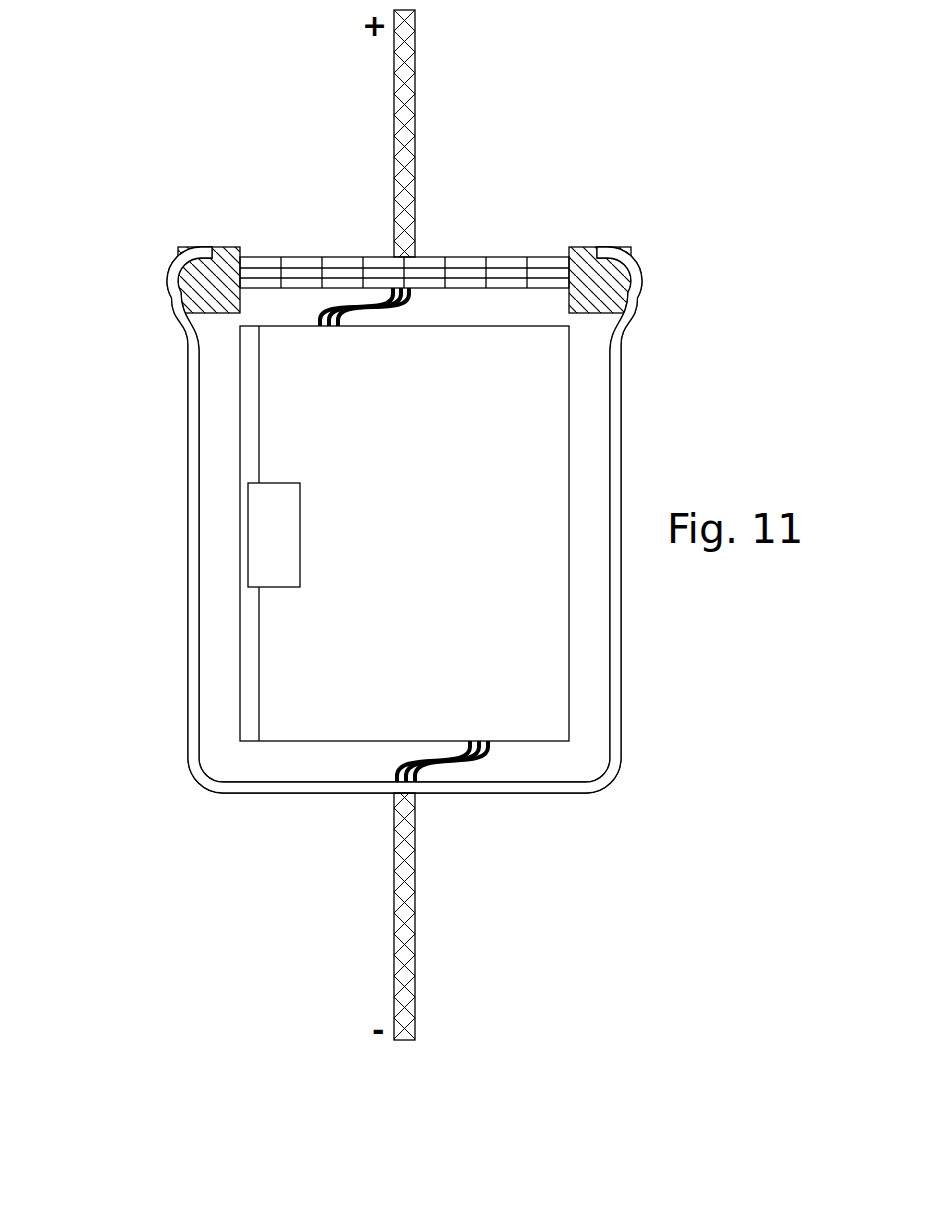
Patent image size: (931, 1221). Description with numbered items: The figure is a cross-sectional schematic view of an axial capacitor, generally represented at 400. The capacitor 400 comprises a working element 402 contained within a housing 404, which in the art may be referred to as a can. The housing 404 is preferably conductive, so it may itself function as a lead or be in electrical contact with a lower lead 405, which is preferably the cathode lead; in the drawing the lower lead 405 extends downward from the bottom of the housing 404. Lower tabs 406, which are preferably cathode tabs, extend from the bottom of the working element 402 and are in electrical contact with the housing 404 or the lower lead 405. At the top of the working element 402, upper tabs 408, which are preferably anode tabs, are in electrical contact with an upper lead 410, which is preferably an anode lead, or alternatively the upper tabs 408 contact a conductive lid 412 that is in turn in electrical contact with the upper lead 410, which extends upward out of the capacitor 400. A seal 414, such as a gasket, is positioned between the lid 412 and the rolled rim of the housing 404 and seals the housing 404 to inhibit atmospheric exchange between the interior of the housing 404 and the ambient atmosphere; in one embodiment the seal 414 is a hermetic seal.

The capacitor 400 is at (630, 470).
The working element 402 is at (305, 686).
The housing 404 is at (193, 428).
The lower lead 405 is at (403, 852).
The lower tabs 406 is at (480, 770).
The upper tabs 408 is at (395, 308).
The upper lead 410 is at (403, 110).
The conductive lid 412 is at (470, 273).
The seal 414 is at (608, 284).